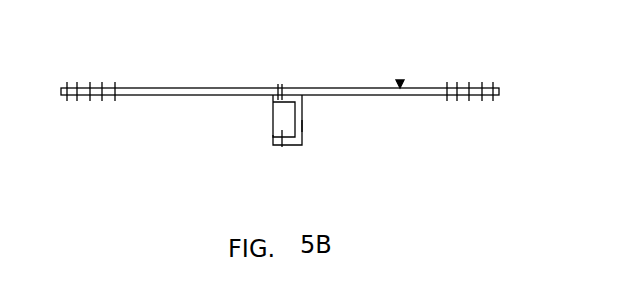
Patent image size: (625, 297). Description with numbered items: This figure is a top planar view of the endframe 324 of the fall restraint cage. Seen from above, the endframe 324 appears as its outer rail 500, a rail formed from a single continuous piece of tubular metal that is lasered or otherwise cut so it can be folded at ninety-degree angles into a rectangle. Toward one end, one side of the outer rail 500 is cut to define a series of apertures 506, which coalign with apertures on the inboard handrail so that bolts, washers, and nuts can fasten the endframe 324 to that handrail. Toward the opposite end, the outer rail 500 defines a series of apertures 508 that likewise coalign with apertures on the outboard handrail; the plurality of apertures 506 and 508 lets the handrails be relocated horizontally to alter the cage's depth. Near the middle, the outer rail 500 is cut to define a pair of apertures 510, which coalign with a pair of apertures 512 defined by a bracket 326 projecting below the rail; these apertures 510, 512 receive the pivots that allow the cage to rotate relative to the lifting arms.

The outer rail 500 is at (322, 88).
The apertures 506 is at (507, 68).
The apertures 508 is at (128, 68).
The apertures 510 is at (277, 84).
The apertures 512 is at (275, 138).
The endframe 324 is at (400, 80).
The bracket 326 is at (303, 130).